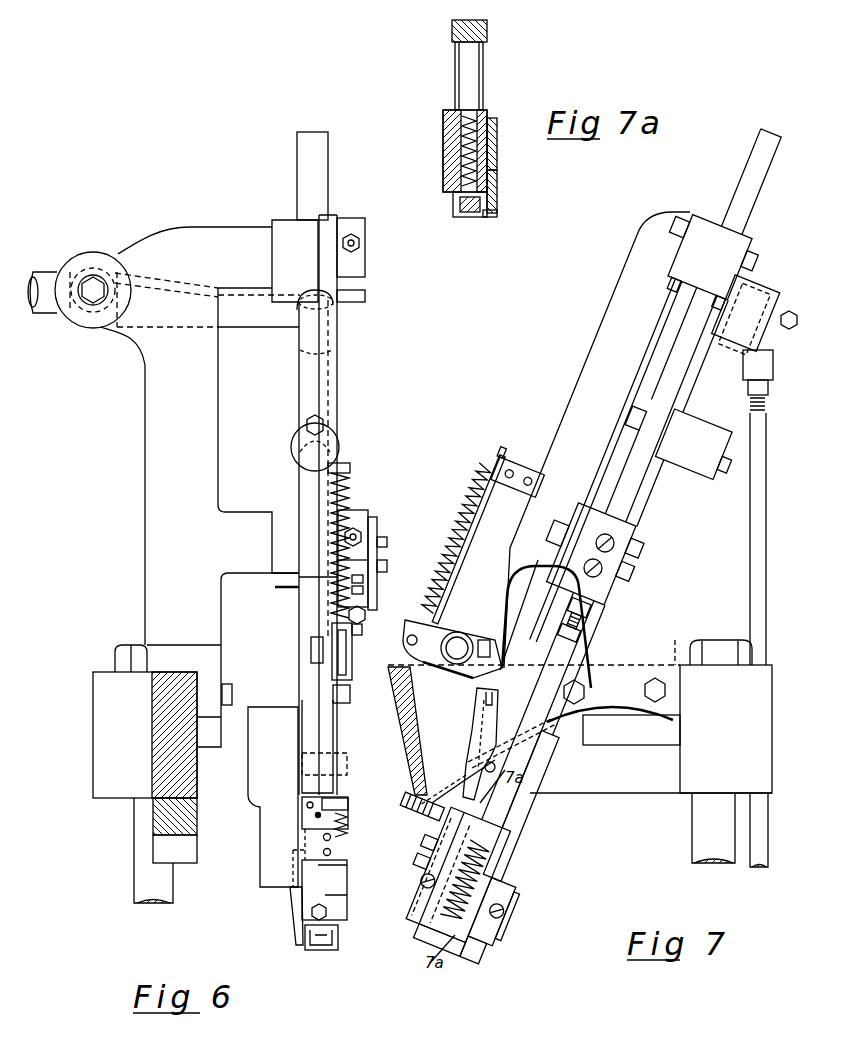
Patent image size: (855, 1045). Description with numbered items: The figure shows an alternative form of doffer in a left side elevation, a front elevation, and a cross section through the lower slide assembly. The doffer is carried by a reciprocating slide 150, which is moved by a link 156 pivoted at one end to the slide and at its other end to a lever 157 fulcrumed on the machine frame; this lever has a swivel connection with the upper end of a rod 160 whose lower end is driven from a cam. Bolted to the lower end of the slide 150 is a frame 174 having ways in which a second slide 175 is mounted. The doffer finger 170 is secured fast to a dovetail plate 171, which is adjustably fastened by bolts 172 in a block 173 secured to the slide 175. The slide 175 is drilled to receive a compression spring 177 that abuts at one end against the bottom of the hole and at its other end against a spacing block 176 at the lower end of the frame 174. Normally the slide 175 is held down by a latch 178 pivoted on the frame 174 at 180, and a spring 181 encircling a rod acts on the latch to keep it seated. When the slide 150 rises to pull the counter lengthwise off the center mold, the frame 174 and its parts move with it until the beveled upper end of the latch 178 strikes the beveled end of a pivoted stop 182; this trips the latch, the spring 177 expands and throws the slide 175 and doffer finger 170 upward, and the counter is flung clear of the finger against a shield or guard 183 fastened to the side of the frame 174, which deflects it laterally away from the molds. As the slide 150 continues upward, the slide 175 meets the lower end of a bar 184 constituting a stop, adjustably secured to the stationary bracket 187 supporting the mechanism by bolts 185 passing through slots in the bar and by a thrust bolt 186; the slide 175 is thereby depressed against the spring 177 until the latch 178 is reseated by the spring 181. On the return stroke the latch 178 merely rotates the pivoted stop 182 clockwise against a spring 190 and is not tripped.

In FIG. 6, the slide 150 is at (308, 615).
In FIG. 7A, the slide 150 is at (488, 28).
In FIG. 7, the slide 150 is at (622, 498).
In FIG. 6, the link 156 is at (312, 408).
In FIG. 7, the link 156 is at (720, 372).
In FIG. 6, the lever 157 is at (235, 318).
In FIG. 7, the lever 157 is at (763, 300).
In FIG. 7, the rod 160 is at (762, 530).
In FIG. 6, the doffer finger 170 is at (296, 900).
In FIG. 7A, the doffer finger 170 is at (494, 163).
In FIG. 7, the doffer finger 170 is at (520, 880).
In FIG. 7A, the dovetail plate 171 is at (494, 180).
In FIG. 7, the dovetail plate 171 is at (510, 925).
In FIG. 7, the bolts 172 is at (503, 910).
In FIG. 6, the block 173 is at (305, 923).
In FIG. 7A, the block 173 is at (489, 217).
In FIG. 7, the block 173 is at (485, 935).
In FIG. 7A, the frame 174 is at (465, 70).
In FIG. 7, the frame 174 is at (520, 815).
In FIG. 6, the slide 175 is at (342, 880).
In FIG. 7A, the slide 175 is at (447, 136).
In FIG. 7, the slide 175 is at (490, 855).
In FIG. 6, the spacing block 176 is at (333, 940).
In FIG. 7A, the spacing block 176 is at (455, 215).
In FIG. 7, the spacing block 176 is at (457, 937).
In FIG. 7A, the compression spring 177 is at (460, 160).
In FIG. 7, the compression spring 177 is at (500, 862).
In FIG. 6, the latch 178 is at (335, 755).
In FIG. 7, the latch 178 is at (482, 720).
In FIG. 6, the pivot 180 is at (318, 768).
In FIG. 7, the pivot 180 is at (485, 766).
In FIG. 6, the spring 181 is at (343, 821).
In FIG. 7, the spring 181 is at (420, 812).
In FIG. 6, the pivoted stop 182 is at (333, 670).
In FIG. 7, the pivoted stop 182 is at (480, 640).
In FIG. 6, the shield or guard 183 is at (267, 818).
In FIG. 7, the shield or guard 183 is at (580, 729).
In FIG. 6, the bar 184 is at (341, 697).
In FIG. 7, the bar 184 is at (566, 645).
In FIG. 6, the bolts 185 is at (389, 567).
In FIG. 7, the bolts 185 is at (620, 568).
In FIG. 6, the thrust bolt 186 is at (366, 620).
In FIG. 7, the thrust bolt 186 is at (590, 620).
In FIG. 6, the stationary bracket 187 is at (338, 377).
In FIG. 7, the stationary bracket 187 is at (555, 440).
In FIG. 6, the spring 190 is at (352, 493).
In FIG. 7, the spring 190 is at (490, 498).